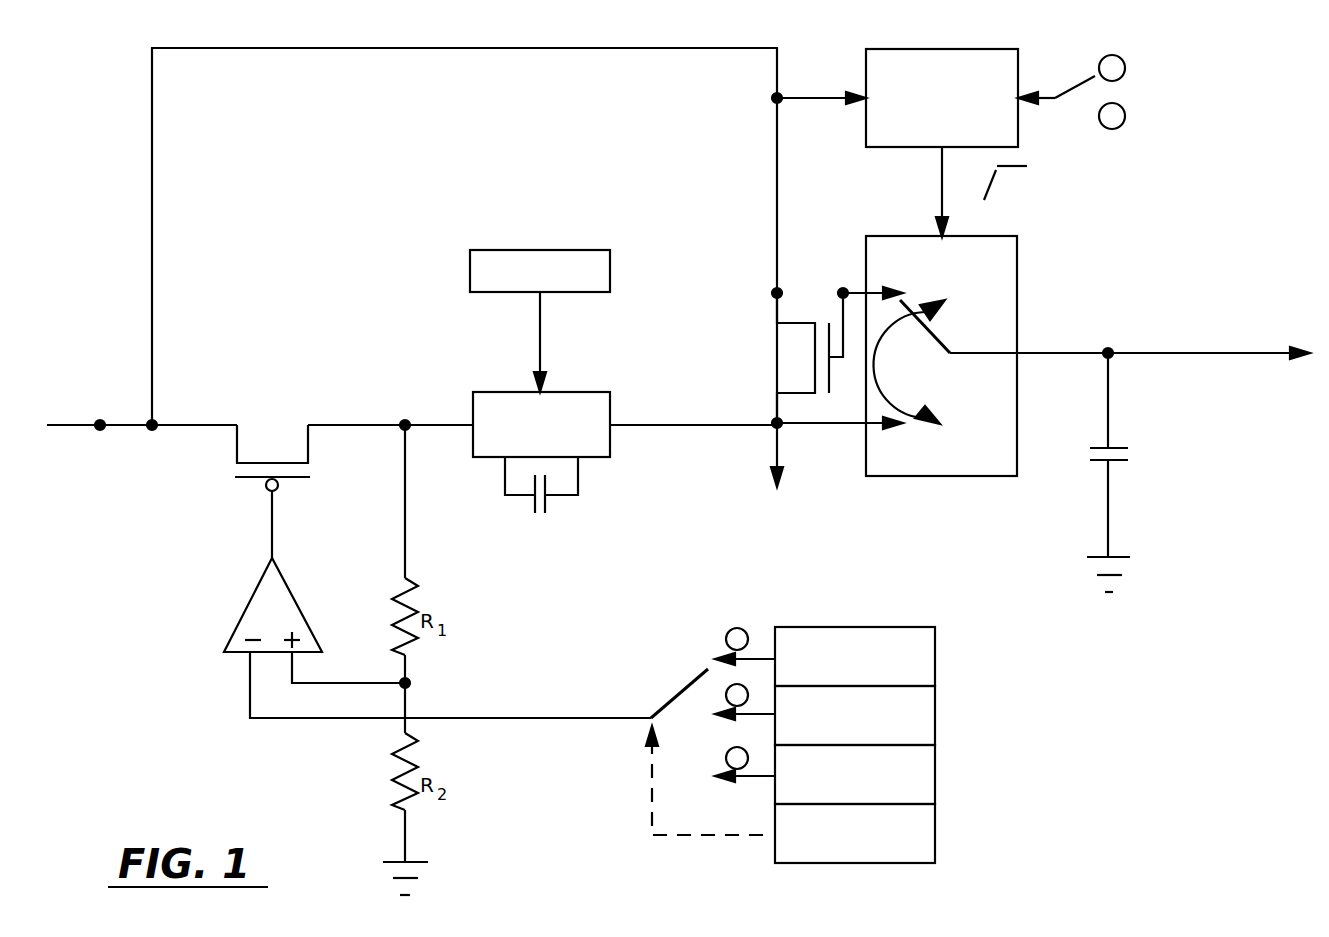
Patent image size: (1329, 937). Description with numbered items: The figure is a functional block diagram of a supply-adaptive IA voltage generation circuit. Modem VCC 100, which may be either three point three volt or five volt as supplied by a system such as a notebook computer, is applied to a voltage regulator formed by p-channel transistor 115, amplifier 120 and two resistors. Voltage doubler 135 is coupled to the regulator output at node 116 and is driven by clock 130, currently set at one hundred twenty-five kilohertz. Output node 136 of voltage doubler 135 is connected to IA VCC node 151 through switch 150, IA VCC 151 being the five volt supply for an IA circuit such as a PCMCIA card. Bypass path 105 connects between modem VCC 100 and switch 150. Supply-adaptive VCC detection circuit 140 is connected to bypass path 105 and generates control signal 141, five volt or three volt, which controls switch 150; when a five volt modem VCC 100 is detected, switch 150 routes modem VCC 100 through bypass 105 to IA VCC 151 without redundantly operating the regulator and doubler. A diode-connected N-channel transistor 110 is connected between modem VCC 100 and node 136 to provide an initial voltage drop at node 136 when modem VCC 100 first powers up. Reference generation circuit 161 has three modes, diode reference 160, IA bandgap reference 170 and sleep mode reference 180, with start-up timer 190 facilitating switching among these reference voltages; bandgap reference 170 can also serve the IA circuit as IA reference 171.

The modem VCC 100 is at (93, 509).
The bypass path 105 is at (550, 50).
The diode-connected N-channel transistor 110 is at (797, 352).
The p-channel transistor 115 is at (300, 465).
The node 116 is at (368, 425).
The amplifier 120 is at (278, 598).
The clock 130 is at (568, 250).
The voltage doubler 135 is at (598, 402).
The output node 136 is at (758, 432).
The supply-adaptive VCC detection circuit 140 is at (993, 60).
The control signal 141 is at (1032, 183).
The switch 150 is at (960, 277).
The IA VCC node 151 is at (1210, 305).
The diode reference 160 is at (910, 650).
The reference generation circuit 161 is at (755, 850).
The IA bandgap reference 170 is at (888, 707).
The IA reference 171 is at (1180, 110).
The sleep mode reference 180 is at (910, 790).
The start-up timer 190 is at (905, 840).